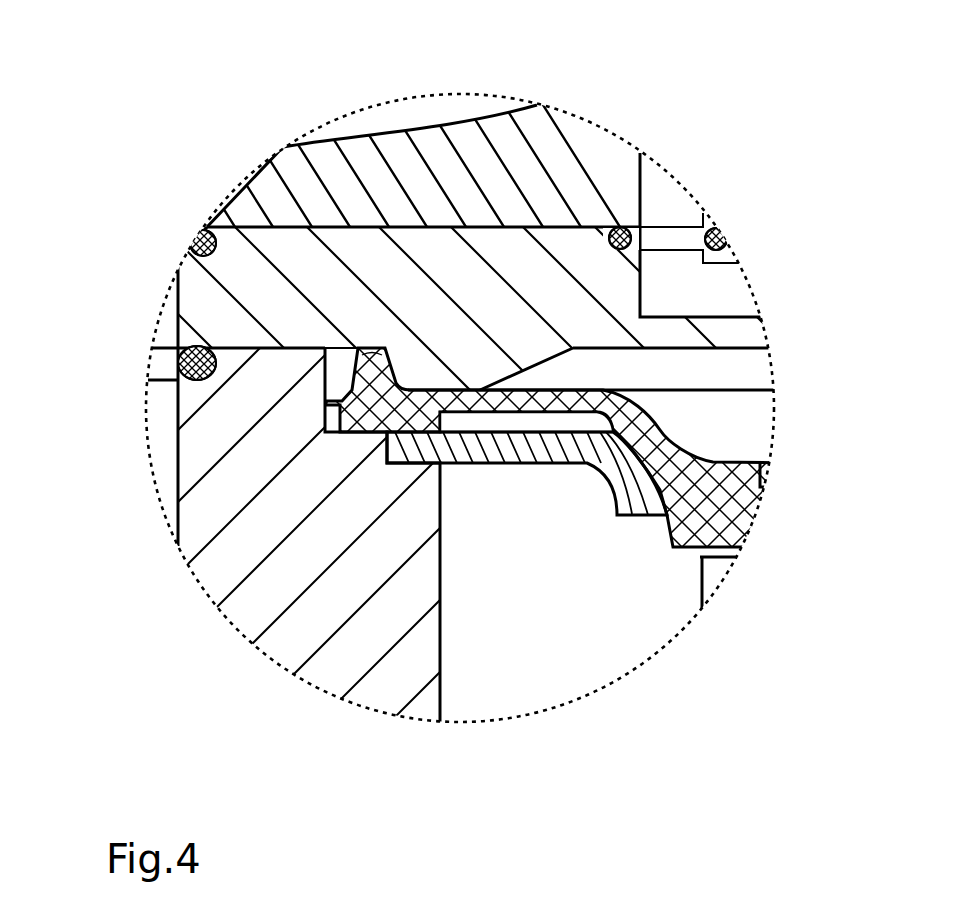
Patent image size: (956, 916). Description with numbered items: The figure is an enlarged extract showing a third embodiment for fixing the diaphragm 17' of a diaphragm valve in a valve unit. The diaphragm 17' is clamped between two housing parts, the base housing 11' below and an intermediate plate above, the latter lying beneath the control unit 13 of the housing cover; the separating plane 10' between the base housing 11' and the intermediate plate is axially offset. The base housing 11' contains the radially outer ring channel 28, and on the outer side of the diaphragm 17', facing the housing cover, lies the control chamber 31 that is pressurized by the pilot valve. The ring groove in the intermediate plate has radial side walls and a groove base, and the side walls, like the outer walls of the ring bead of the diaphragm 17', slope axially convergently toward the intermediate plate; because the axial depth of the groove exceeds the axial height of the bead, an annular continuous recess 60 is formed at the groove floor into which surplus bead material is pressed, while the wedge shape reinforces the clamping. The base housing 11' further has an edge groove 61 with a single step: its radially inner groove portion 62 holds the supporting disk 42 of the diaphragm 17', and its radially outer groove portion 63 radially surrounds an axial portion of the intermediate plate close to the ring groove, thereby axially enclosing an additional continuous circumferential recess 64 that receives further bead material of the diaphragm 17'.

The separating plane 10' is at (108, 349).
The base housing 11' is at (382, 538).
The control unit 13 is at (553, 177).
The diaphragm 17' is at (592, 447).
The ring channel 28 is at (527, 599).
The control chamber 31 is at (723, 412).
The supporting disk 42 is at (540, 463).
The annular continuous recess 60 is at (388, 348).
The edge groove 61 is at (331, 479).
The radially inner groove portion 62 is at (381, 479).
The radially outer groove portion 63 is at (309, 437).
The additional continuous circumferential recess 64 is at (335, 418).